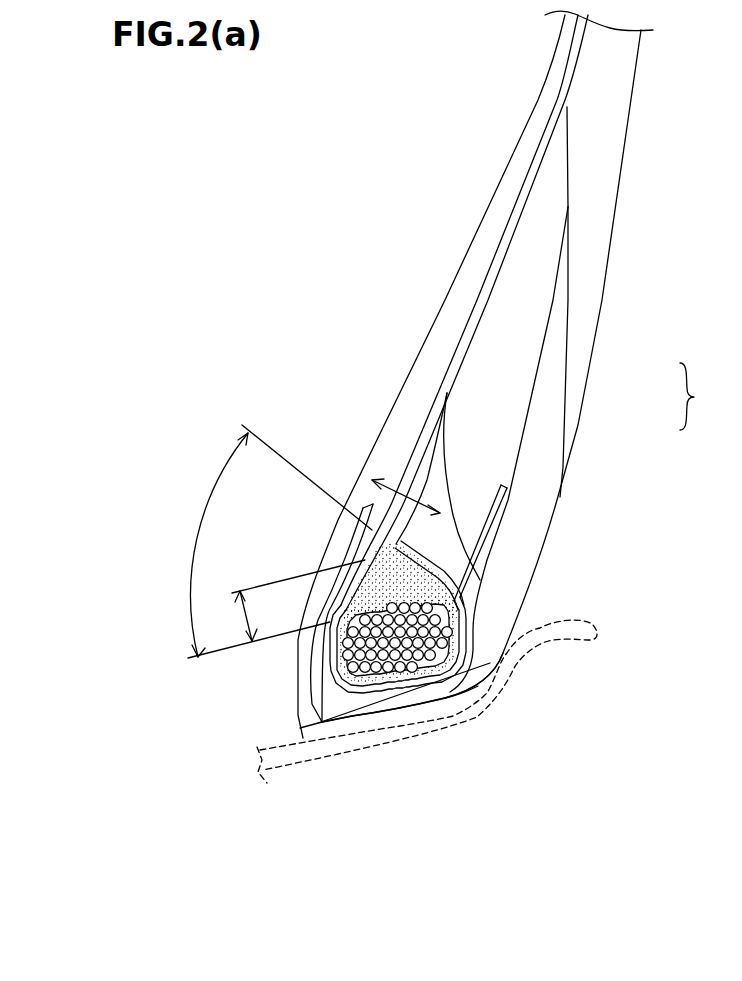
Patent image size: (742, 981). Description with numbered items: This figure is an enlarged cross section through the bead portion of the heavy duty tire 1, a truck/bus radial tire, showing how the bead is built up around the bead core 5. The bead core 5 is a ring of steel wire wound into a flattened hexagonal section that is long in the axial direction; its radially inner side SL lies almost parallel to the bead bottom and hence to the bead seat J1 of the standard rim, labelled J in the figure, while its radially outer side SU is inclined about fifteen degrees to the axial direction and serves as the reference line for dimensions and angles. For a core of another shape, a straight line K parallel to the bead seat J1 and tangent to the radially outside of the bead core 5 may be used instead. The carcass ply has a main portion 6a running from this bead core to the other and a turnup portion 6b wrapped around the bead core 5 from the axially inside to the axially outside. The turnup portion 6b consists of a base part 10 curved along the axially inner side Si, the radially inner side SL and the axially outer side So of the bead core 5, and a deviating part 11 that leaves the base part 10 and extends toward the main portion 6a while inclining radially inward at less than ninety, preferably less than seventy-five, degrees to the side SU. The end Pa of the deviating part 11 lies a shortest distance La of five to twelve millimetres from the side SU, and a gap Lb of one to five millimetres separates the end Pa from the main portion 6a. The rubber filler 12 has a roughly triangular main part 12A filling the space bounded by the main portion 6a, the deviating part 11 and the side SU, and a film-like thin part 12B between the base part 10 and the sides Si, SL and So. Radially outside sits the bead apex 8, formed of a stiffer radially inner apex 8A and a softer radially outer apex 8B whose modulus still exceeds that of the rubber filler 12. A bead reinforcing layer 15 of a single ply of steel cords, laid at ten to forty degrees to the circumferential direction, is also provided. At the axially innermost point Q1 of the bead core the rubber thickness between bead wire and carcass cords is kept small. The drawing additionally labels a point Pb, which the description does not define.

The heavy duty tire 1 is at (343, 238).
The carcass ply main portion 6a is at (528, 187).
The base part of turnup portion 10 is at (414, 678).
The carcass ply turnup portion 6b is at (465, 674).
The bead apex 8 is at (566, 399).
The radially inner apex 8A is at (423, 480).
The radially outer apex 8B is at (517, 368).
The deviating part 11 is at (432, 562).
The bead core 5 is at (433, 645).
The rubber filler 12 is at (433, 654).
The main part of rubber filler 12A is at (315, 580).
The thin part of rubber filler 12B is at (433, 680).
The bead reinforcing layer 15 is at (462, 652).
The radially outer side of bead core SU is at (408, 541).
The straight line K is at (552, 551).
The end of deviating part Pa is at (420, 527).
The point Pb is at (458, 596).
The axially outer side of bead core So is at (460, 603).
The axially inner side of bead core Si is at (322, 648).
The axially innermost point of bead core Q1 is at (329, 657).
The radially inner side of bead core SL is at (386, 690).
The distance La is at (286, 600).
The gap Lb is at (412, 488).
The bead seat J1 is at (291, 762).
The rim J is at (427, 741).